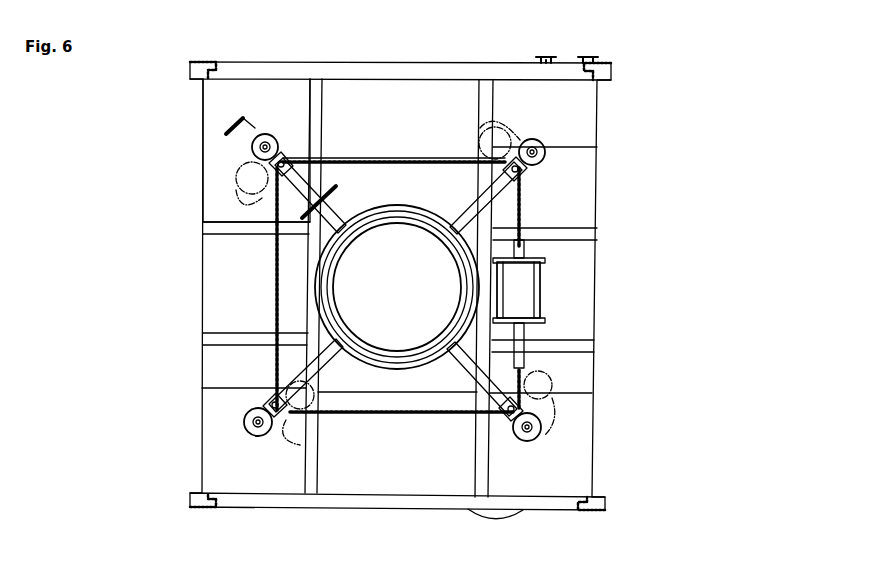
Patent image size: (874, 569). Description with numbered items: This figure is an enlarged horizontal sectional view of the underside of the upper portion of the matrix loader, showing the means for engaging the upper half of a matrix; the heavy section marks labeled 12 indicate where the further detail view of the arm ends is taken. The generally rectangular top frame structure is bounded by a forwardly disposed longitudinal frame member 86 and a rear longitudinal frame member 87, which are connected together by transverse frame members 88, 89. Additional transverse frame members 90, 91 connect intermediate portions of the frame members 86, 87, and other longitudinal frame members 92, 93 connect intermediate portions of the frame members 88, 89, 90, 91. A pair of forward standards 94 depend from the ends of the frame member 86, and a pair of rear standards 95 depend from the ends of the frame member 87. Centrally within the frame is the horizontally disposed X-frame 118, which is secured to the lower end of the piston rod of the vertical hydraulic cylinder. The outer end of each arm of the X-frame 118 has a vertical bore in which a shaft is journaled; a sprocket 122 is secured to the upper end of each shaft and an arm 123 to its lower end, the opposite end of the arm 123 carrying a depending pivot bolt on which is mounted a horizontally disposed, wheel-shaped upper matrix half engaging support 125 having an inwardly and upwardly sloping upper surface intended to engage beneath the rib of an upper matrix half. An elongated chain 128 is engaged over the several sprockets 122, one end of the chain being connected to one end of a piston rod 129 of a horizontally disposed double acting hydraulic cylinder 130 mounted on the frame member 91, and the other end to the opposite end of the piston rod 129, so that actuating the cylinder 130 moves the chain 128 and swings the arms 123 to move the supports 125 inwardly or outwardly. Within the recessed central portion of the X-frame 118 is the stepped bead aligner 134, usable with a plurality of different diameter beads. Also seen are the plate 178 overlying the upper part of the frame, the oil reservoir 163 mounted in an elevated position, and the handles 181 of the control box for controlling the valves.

The section line 12 is at (284, 160).
The forwardly disposed longitudinal frame member 86 is at (380, 68).
The rear longitudinal frame member 87 is at (378, 510).
The transverse frame member 88 is at (190, 310).
The transverse frame member 89 is at (603, 330).
The transverse frame member 90 is at (318, 125).
The transverse frame member 91 is at (488, 102).
The longitudinal frame member 92 is at (240, 235).
The longitudinal frame member 93 is at (222, 334).
The forward standard 94 is at (212, 62).
The rear standard 95 is at (198, 510).
The X-frame 118 is at (336, 214).
The sprocket 122 is at (320, 162).
The arm 123 is at (286, 160).
The upper matrix half engaging support 125 is at (266, 134).
The chain 128 is at (386, 160).
The piston rod 129 is at (530, 338).
The hydraulic cylinder 130 is at (525, 285).
The bead aligner 134 is at (400, 366).
The oil reservoir 163 is at (515, 512).
The plate 178 is at (590, 433).
The handles 181 is at (588, 56).